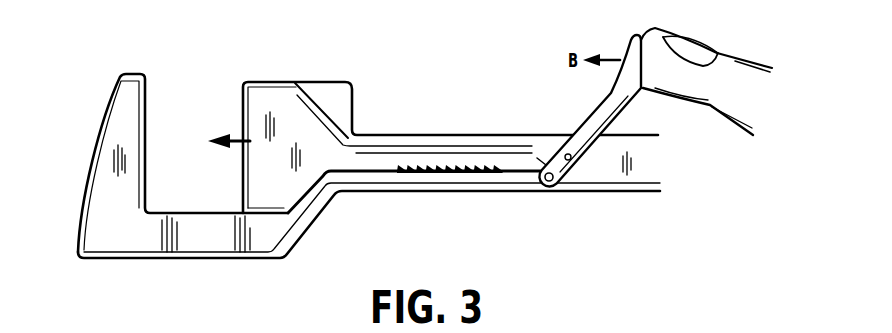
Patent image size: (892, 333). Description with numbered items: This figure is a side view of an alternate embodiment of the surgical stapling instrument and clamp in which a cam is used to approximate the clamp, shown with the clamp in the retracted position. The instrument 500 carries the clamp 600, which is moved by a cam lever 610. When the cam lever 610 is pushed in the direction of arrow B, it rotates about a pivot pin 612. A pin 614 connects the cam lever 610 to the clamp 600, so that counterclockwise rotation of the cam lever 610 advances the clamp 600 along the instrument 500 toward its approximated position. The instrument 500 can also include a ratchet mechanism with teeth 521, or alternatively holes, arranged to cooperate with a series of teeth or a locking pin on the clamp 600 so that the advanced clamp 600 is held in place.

The instrument 500 is at (243, 248).
The clamp 600 is at (300, 125).
The teeth 521 is at (466, 176).
The cam lever 610 is at (599, 99).
The pivot pin 612 is at (548, 198).
The pin 614 is at (577, 160).